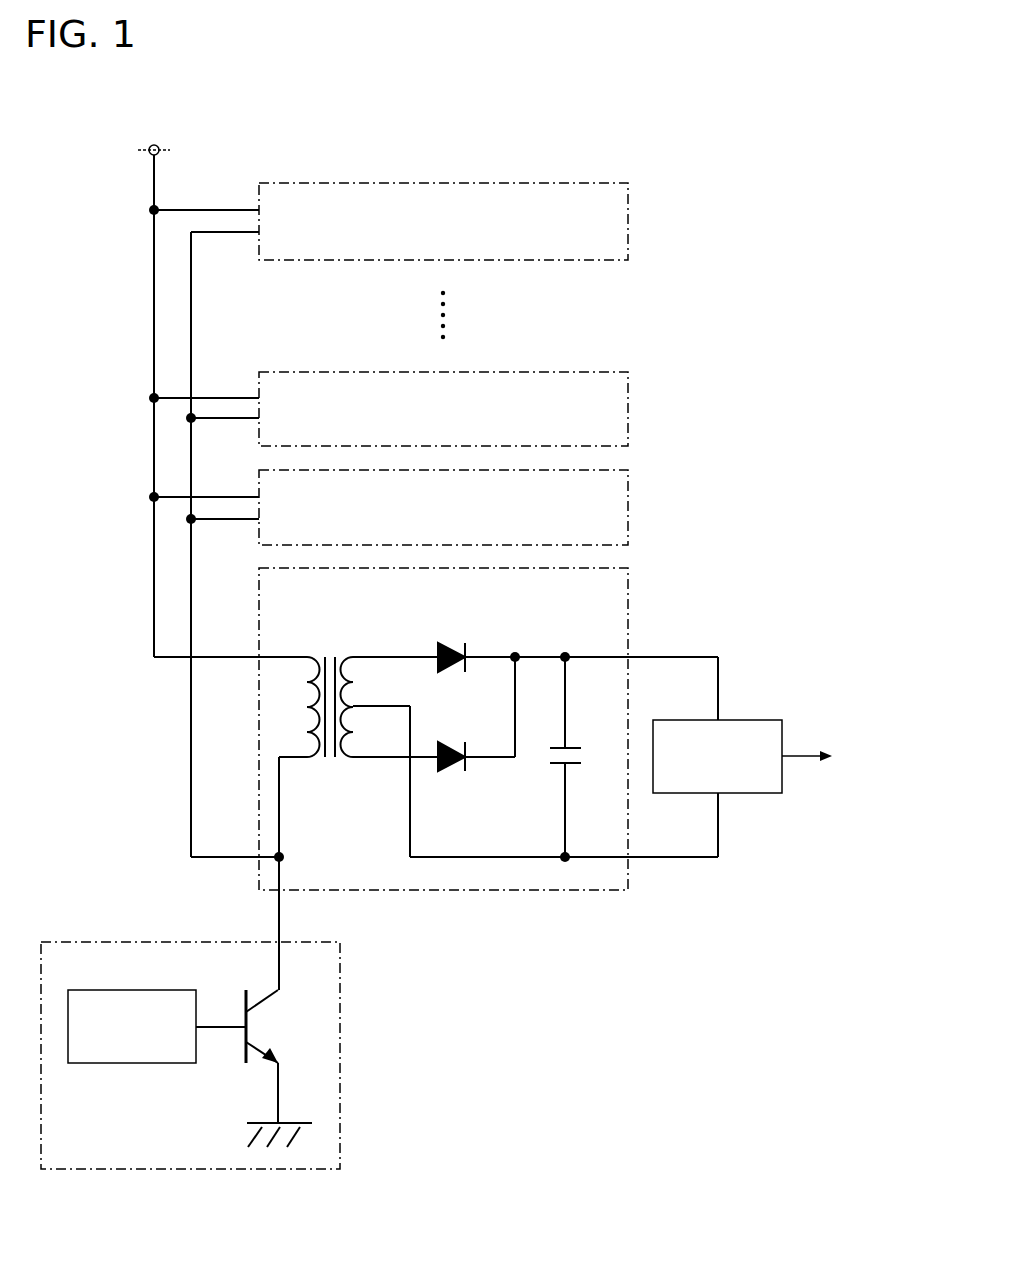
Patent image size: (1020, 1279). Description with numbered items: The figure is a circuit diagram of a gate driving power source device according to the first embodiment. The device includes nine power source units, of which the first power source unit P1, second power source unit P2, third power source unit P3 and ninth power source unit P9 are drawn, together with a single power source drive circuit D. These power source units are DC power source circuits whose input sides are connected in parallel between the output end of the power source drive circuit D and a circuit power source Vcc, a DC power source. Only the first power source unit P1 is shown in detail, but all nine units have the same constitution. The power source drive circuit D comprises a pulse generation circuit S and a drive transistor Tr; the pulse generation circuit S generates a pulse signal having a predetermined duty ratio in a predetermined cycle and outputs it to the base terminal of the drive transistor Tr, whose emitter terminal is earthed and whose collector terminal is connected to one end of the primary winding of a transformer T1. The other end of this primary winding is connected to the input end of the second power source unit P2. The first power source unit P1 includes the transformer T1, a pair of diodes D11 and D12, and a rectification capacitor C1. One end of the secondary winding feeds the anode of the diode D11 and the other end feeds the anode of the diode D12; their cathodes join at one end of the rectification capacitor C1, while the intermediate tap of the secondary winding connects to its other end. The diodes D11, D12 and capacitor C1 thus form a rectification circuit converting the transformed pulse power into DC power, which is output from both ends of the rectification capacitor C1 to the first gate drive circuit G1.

The circuit power source Vcc is at (153, 136).
The ninth power source unit P9 is at (628, 222).
The third power source unit P3 is at (628, 410).
The second power source unit P2 is at (628, 507).
The first power source unit P1 is at (628, 617).
The transformer T1 is at (326, 649).
The diode D11 is at (455, 642).
The diode D12 is at (452, 773).
The rectification capacitor C1 is at (575, 745).
The first gate drive circuit G1 is at (750, 718).
The power source drive circuit D is at (340, 1050).
The pulse generation circuit S is at (152, 988).
The drive transistor Tr is at (243, 1052).